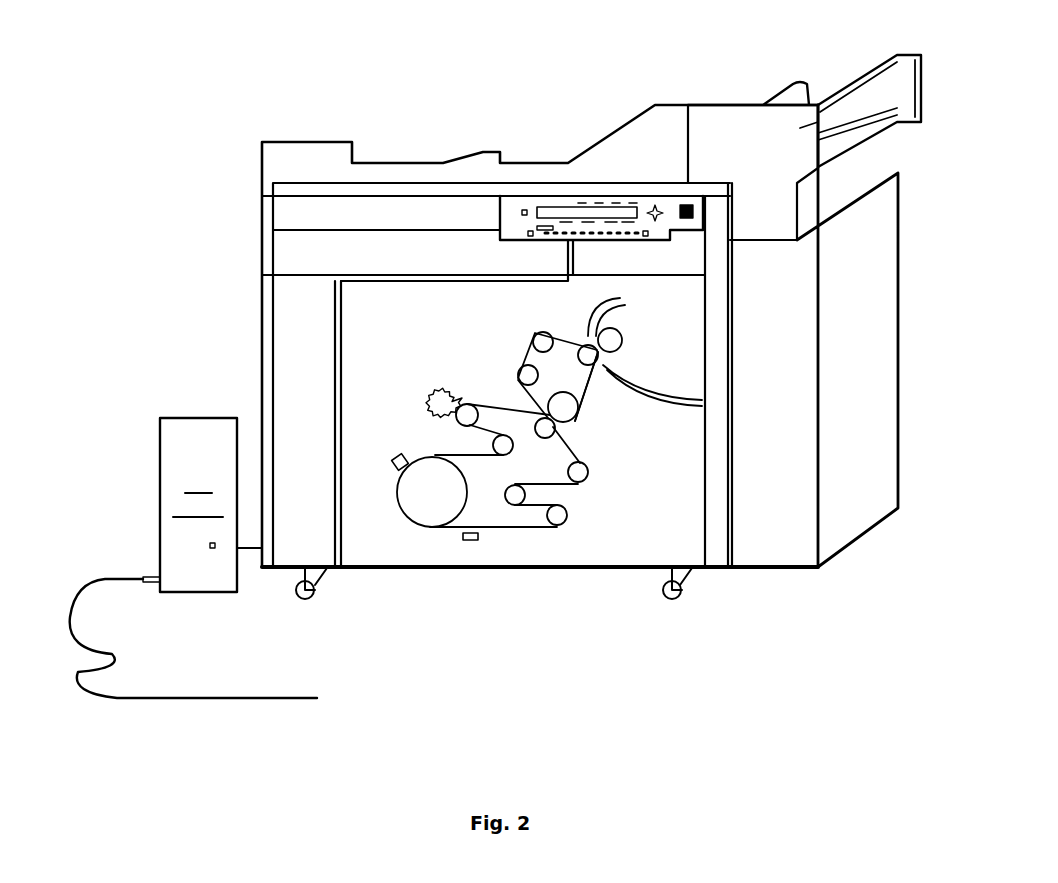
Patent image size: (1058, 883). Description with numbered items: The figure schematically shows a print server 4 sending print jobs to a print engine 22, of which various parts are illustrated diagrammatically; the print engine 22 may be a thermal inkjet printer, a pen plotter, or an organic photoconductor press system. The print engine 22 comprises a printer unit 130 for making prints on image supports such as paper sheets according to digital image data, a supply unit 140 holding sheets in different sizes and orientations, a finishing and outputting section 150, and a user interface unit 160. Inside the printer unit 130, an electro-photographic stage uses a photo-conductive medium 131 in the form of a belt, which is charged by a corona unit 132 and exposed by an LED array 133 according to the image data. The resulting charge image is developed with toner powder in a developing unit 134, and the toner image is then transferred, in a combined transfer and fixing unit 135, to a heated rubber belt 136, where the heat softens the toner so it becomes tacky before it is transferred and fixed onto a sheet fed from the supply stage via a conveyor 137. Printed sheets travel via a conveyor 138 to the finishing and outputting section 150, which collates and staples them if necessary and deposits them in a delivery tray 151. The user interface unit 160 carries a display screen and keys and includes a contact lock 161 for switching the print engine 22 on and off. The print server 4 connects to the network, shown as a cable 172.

The print engine 22 is at (518, 72).
The print server 4 is at (208, 412).
The printer unit 130 is at (420, 573).
The photo-conductive medium 131 is at (530, 530).
The corona unit 132 is at (467, 540).
The LED array 133 is at (393, 460).
The developing unit 134 is at (430, 407).
The combined transfer and fixing unit 135 is at (500, 350).
The heated rubber belt 136 is at (595, 383).
The conveyor 137 is at (668, 398).
The conveyor 138 is at (603, 303).
The supply unit 140 is at (880, 527).
The finishing and outputting section 150 is at (708, 108).
The delivery tray 151 is at (877, 63).
The user interface unit 160 is at (530, 193).
The contact lock 161 is at (695, 220).
The cable 172 is at (307, 697).